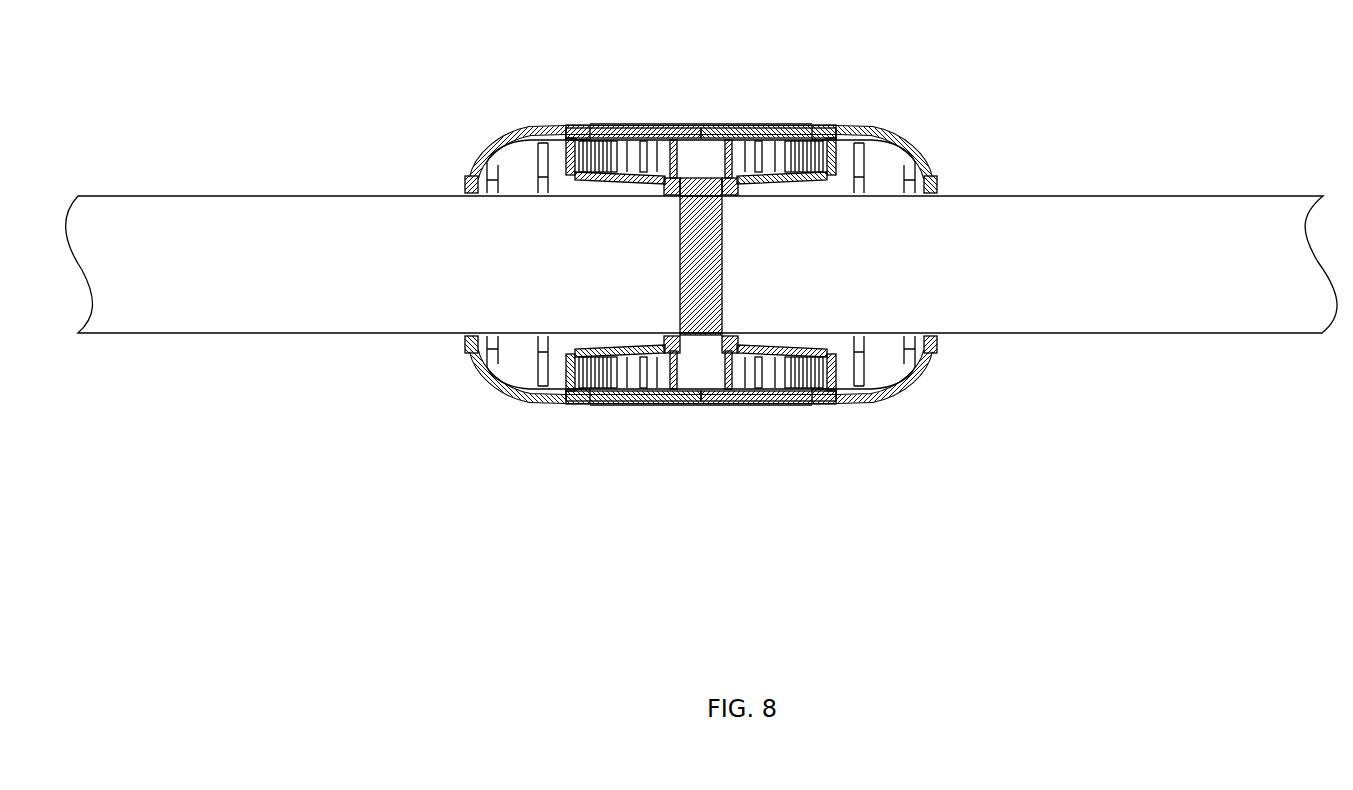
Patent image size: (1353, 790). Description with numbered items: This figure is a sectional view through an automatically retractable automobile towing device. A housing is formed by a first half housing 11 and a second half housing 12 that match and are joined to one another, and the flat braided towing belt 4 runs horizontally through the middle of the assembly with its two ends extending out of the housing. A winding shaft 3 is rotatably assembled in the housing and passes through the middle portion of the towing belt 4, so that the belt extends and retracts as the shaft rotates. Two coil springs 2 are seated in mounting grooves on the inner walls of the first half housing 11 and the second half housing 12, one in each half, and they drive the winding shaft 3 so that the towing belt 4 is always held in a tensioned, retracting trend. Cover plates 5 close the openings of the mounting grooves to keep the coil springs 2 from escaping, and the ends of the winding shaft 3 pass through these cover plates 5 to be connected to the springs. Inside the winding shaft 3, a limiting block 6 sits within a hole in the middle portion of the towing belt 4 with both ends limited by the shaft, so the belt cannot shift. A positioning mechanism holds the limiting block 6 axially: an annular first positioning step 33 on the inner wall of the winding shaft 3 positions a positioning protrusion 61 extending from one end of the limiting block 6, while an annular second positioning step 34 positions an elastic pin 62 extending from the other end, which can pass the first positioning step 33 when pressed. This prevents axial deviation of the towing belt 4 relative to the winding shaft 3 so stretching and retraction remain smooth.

The coil springs 2 is at (810, 126).
The winding shaft 3 is at (752, 128).
The towing belt 4 is at (1172, 220).
The cover plates 5 is at (560, 122).
The limiting block 6 is at (650, 124).
The first half housing 11 is at (462, 160).
The second half housing 12 is at (900, 398).
The first positioning step 33 is at (730, 196).
The second positioning step 34 is at (735, 332).
The positioning protrusion 61 is at (738, 184).
The elastic pin 62 is at (700, 400).